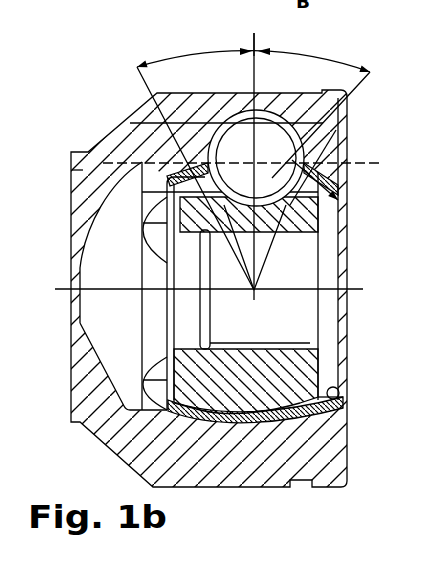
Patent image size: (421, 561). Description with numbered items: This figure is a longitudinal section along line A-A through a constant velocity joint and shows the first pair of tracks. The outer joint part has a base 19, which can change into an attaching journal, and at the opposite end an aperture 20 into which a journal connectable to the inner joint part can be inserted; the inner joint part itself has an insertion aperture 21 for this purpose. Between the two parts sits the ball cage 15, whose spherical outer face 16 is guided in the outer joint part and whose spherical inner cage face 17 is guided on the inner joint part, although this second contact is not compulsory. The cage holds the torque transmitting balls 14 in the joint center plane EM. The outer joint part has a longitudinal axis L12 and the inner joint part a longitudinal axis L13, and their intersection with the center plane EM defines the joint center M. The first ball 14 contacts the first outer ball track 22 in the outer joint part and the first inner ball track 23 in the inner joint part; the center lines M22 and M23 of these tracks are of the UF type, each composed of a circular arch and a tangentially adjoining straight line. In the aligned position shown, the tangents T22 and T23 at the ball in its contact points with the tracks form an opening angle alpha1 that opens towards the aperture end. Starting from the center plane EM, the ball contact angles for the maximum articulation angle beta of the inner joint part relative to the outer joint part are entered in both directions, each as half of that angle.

The torque transmitting balls 14 is at (266, 113).
The ball cage 15 is at (343, 396).
The spherical outer face 16 is at (347, 422).
The spherical inner cage face 17 is at (332, 391).
The base 19 is at (80, 213).
The aperture 20 is at (352, 152).
The insertion aperture 21 is at (308, 342).
The outer ball track 22 is at (355, 108).
The inner ball track 23 is at (278, 212).
The joint center M is at (256, 292).
The joint center plane EM is at (255, 43).
The longitudinal axis of the outer joint part L12 is at (60, 289).
The longitudinal axis of the inner joint part L13 is at (358, 289).
The center line of the outer ball track M22 is at (352, 163).
The center line of the inner ball track M23 is at (136, 165).
The tangent at the ball in the contact point with the outer track T22 is at (210, 97).
The tangent at the ball in the contact point with the inner track T23 is at (72, 171).
The opening angle alpha1 is at (352, 135).
The maximum articulation angle beta is at (195, 38).